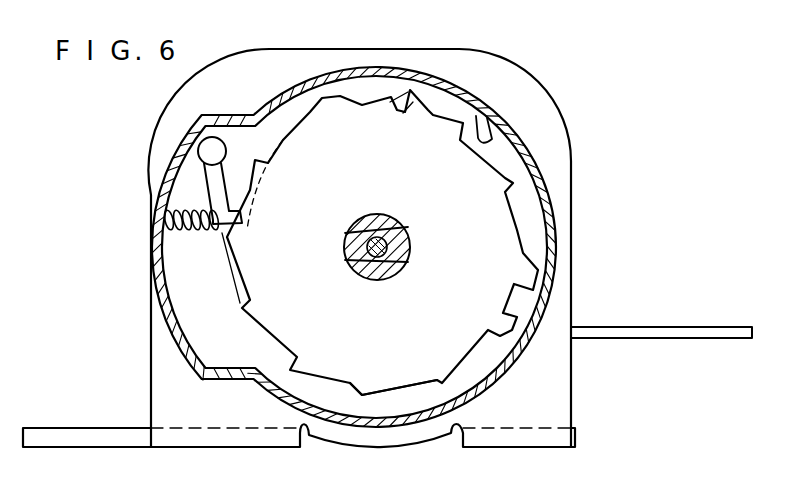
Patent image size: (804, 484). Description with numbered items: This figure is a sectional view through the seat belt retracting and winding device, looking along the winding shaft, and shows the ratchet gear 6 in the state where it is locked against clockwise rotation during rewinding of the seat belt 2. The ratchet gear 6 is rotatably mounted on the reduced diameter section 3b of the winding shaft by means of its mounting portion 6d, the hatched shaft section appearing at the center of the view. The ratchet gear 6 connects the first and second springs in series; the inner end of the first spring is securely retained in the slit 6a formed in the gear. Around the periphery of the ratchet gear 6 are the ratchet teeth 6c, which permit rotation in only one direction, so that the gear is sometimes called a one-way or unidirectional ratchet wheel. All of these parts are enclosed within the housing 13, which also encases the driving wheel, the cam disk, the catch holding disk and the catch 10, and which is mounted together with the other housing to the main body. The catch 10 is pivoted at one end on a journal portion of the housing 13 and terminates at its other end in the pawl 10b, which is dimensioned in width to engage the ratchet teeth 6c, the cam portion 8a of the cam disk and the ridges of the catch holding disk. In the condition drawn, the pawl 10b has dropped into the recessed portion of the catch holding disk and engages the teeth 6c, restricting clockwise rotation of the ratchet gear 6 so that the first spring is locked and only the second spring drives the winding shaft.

The seat belt 2 is at (675, 330).
The reduced diameter section of winding shaft 3b is at (410, 262).
The ratchet gear 6 is at (481, 195).
The slit 6a is at (403, 233).
The ratchet teeth 6c is at (372, 387).
The mounting portion 6d is at (408, 243).
The cam portion 8a is at (413, 102).
The catch 10 is at (213, 177).
The pawl 10b is at (219, 237).
The housing 13 is at (549, 200).